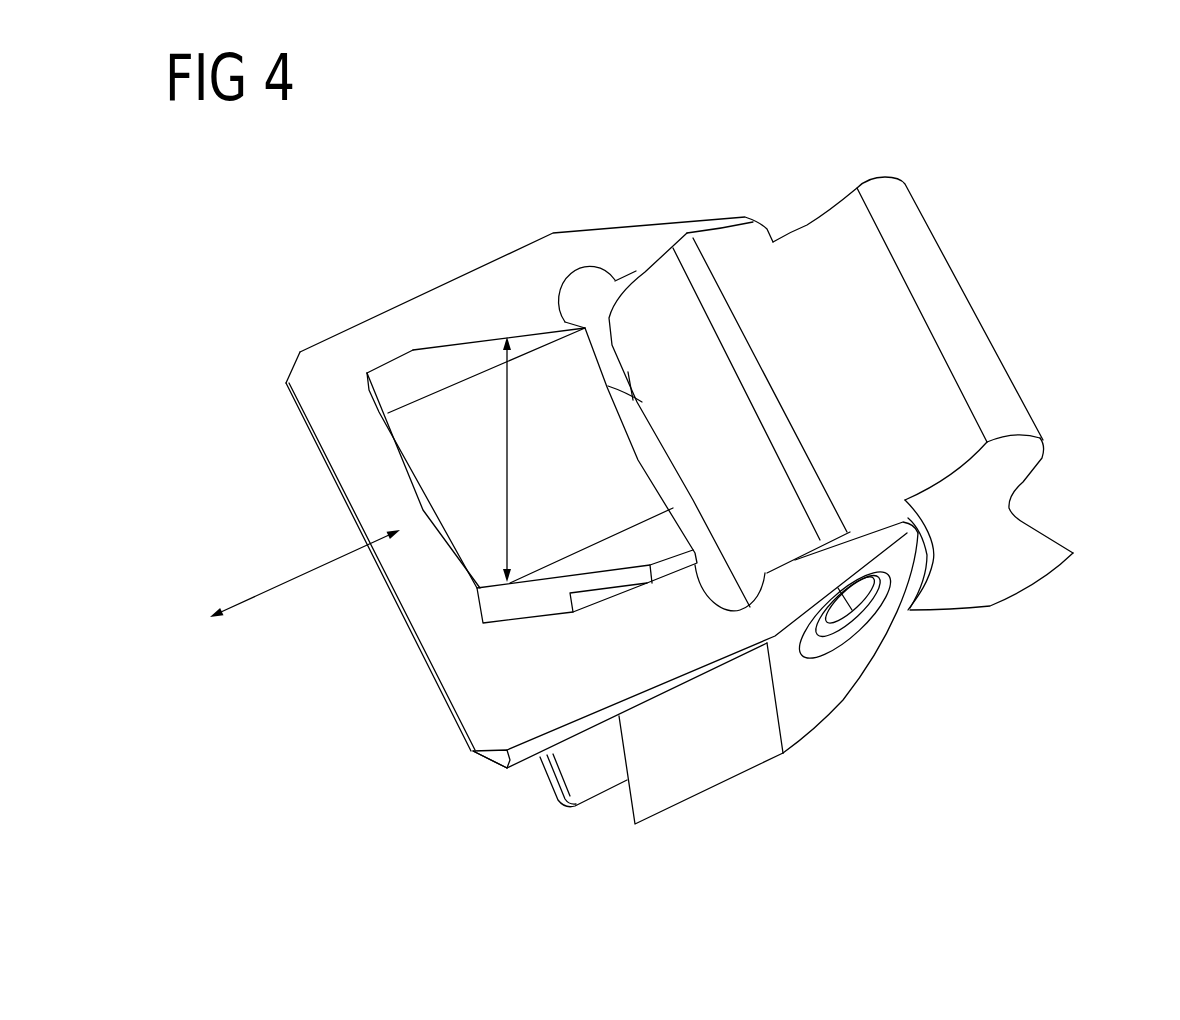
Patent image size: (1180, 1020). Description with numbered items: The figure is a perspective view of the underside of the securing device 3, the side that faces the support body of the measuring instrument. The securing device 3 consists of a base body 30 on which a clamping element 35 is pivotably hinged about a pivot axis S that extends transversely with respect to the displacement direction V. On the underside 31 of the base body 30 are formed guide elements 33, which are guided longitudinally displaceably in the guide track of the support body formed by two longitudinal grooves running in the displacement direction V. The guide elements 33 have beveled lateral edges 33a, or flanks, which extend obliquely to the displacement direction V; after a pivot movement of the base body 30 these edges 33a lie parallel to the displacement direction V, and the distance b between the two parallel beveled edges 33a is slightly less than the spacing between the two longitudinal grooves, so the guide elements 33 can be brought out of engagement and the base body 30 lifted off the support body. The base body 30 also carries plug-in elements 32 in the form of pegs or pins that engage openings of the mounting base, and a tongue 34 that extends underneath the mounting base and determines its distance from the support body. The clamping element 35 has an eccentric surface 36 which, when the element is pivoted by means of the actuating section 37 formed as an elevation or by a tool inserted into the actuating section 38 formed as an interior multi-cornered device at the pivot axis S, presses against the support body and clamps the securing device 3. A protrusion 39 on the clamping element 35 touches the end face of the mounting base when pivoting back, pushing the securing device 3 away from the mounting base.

The securing device 3 is at (702, 180).
The base body 30 is at (464, 266).
The underside 31 is at (317, 398).
The plug-in elements 32 is at (592, 780).
The guide elements 33 is at (392, 362).
The beveled lateral edges 33a is at (463, 342).
The tongue 34 is at (509, 766).
The clamping element 35 is at (998, 624).
The eccentric surface 36 is at (650, 303).
The actuating section 37 is at (930, 275).
The actuating section 38 is at (833, 608).
The protrusion 39 is at (1047, 505).
The pivot axis S is at (852, 628).
The distance b is at (518, 459).
The displacement direction V is at (305, 567).